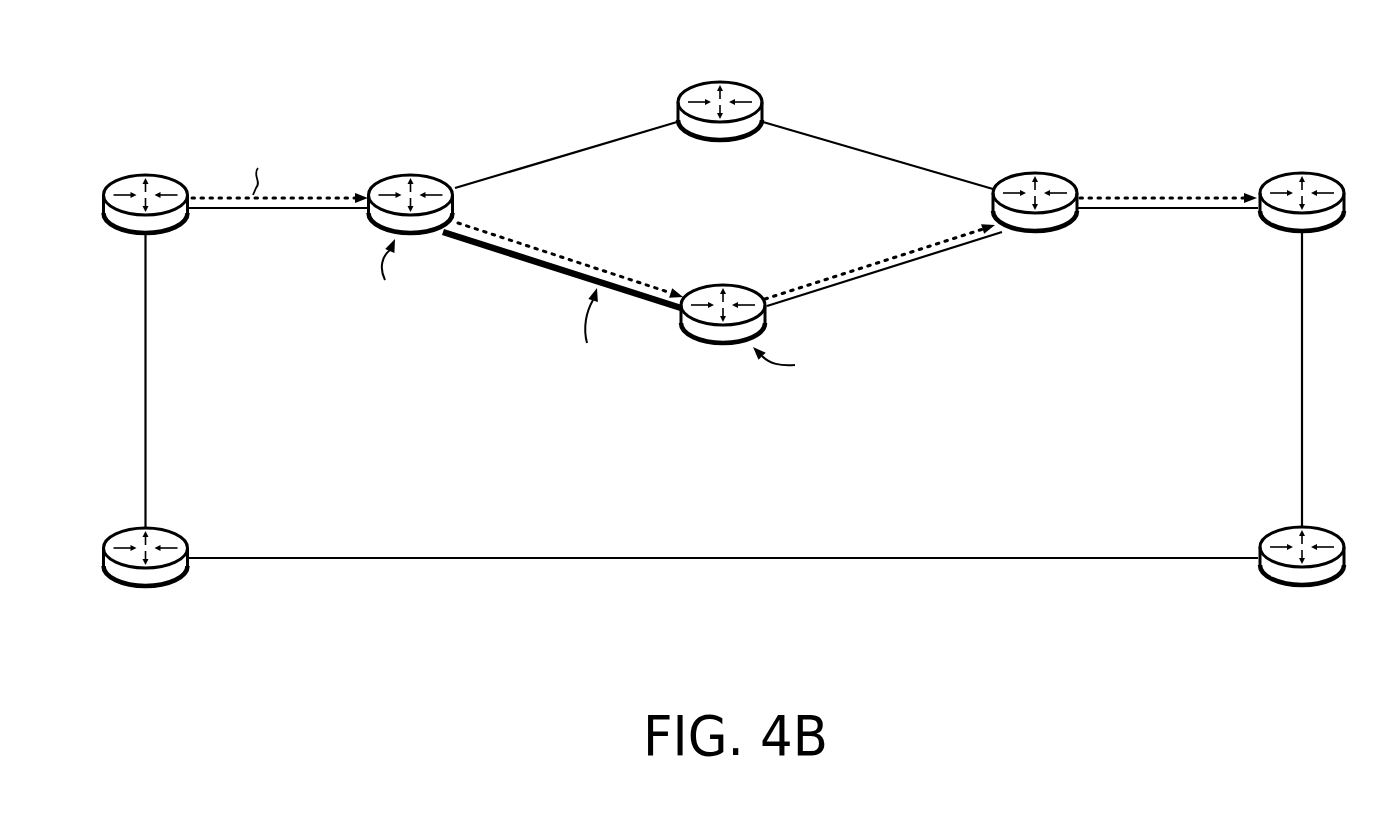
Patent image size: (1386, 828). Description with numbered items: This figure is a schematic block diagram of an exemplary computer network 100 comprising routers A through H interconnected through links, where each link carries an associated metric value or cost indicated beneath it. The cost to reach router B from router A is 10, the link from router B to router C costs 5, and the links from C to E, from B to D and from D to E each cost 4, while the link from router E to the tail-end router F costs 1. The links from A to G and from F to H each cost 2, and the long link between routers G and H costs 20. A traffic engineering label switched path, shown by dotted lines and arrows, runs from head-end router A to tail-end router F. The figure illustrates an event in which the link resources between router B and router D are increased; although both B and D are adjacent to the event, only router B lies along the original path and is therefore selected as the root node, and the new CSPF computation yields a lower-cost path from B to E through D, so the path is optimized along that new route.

The computer network 100 is at (1195, 50).
The link cost A-B 10 is at (278, 224).
The link cost B-C 5 is at (566, 160).
The link cost 4 is at (722, 219).
The link cost E-F 1 is at (1168, 224).
The link cost 2 is at (724, 380).
The link cost G-H 20 is at (723, 583).